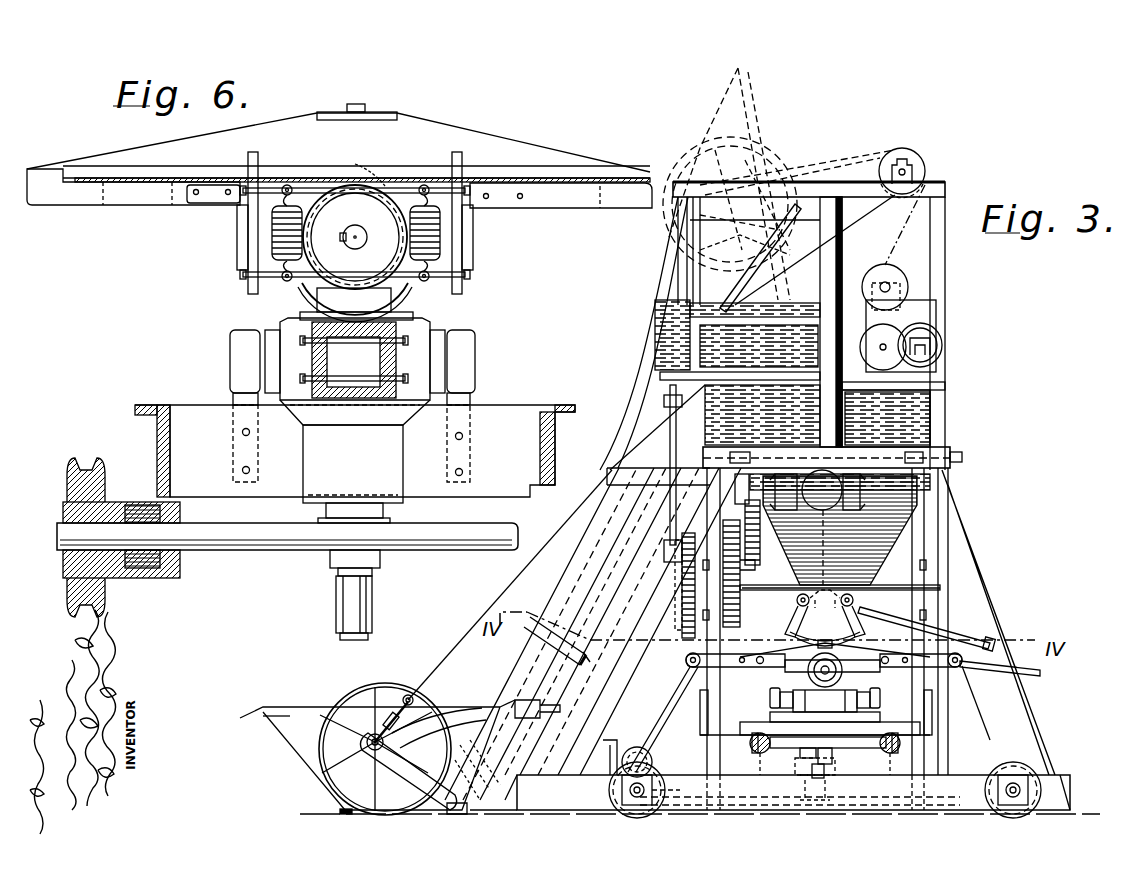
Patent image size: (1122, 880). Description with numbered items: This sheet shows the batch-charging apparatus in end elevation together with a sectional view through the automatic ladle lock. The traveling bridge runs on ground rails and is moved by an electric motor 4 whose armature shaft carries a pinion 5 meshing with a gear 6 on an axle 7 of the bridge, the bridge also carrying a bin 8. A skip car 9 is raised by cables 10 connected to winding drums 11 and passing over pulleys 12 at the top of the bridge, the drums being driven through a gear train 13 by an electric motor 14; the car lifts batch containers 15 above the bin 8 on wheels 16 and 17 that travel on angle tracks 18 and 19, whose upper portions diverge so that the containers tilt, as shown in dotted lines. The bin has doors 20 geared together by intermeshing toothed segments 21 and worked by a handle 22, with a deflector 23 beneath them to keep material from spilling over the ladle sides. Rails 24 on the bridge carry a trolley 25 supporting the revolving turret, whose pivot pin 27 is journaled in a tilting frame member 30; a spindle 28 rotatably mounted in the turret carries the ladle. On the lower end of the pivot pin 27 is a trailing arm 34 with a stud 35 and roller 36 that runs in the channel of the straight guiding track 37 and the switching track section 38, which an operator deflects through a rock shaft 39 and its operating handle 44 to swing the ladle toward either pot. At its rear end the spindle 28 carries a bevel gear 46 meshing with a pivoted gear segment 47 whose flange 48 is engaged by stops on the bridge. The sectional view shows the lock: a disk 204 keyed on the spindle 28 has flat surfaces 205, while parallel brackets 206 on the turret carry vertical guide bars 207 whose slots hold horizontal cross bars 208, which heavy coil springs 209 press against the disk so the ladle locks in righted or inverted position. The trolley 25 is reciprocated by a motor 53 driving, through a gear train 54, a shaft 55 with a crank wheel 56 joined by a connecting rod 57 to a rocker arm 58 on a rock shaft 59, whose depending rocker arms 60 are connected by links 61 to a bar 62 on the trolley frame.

In FIG. 3, the electric motor 4 is at (637, 755).
In FIG. 3, the pinion 5 is at (642, 764).
In FIG. 3, the gear 6 is at (612, 791).
In FIG. 3, the axle 7 is at (640, 800).
In FIG. 3, the bin 8 is at (920, 419).
In FIG. 3, the skip car 9 is at (752, 240).
In FIG. 3, the cables 10 is at (875, 185).
In FIG. 3, the winding drums 11 is at (926, 336).
In FIG. 3, the pulleys 12 is at (915, 165).
In FIG. 3, the gear train 13 is at (915, 298).
In FIG. 3, the electric motor 14 is at (905, 282).
In FIG. 3, the batch containers 15 is at (758, 122).
In FIG. 3, the wheels 16 is at (455, 806).
In FIG. 3, the wheels 17 is at (541, 705).
In FIG. 3, the tracks 18 is at (585, 579).
In FIG. 3, the tracks 19 is at (590, 601).
In FIG. 3, the doors 20 is at (798, 602).
In FIG. 3, the toothed segments 21 is at (870, 569).
In FIG. 3, the handle 22 is at (962, 639).
In FIG. 3, the deflector 23 is at (800, 632).
In FIG. 3, the rails 24 is at (756, 756).
In FIG. 6, the trolley 25 is at (355, 451).
In FIG. 3, the trolley 25 is at (868, 721).
In FIG. 6, the pivot pin 27 is at (386, 306).
In FIG. 6, the spindle 28 is at (368, 238).
In FIG. 6, the member 30 is at (400, 357).
In FIG. 6, the trailing arm 34 is at (336, 560).
In FIG. 3, the trailing arm 34 is at (806, 756).
In FIG. 6, the stud 35 is at (340, 638).
In FIG. 6, the roller 36 is at (337, 606).
In FIG. 3, the roller 36 is at (830, 776).
In FIG. 3, the guiding track 37 is at (832, 757).
In FIG. 3, the switching track section 38 is at (808, 777).
In FIG. 3, the rock shaft 39 is at (686, 661).
In FIG. 3, the operating handle 44 is at (1041, 673).
In FIG. 6, the bevel gear 46 is at (362, 186).
In FIG. 3, the bevel gear 46 is at (843, 674).
In FIG. 3, the gear segment 47 is at (803, 662).
In FIG. 6, the flange 48 is at (62, 197).
In FIG. 3, the motor 53 is at (862, 440).
In FIG. 3, the gear train 54 is at (750, 591).
In FIG. 3, the shaft 55 is at (920, 590).
In FIG. 3, the crank wheel 56 is at (685, 608).
In FIG. 3, the connecting rod 57 is at (678, 509).
In FIG. 3, the rocker arm 58 is at (675, 426).
In FIG. 3, the rock shaft 59 is at (660, 458).
In FIG. 3, the rocker arms 60 is at (712, 689).
In FIG. 3, the links 61 is at (735, 715).
In FIG. 3, the bar 62 is at (749, 723).
In FIG. 6, the disk 204 is at (386, 206).
In FIG. 6, the flat surfaces 205 is at (392, 187).
In FIG. 6, the brackets 206 is at (252, 253).
In FIG. 6, the guide bars 207 is at (258, 267).
In FIG. 6, the cross bars 208 is at (350, 188).
In FIG. 6, the coil springs 209 is at (272, 232).